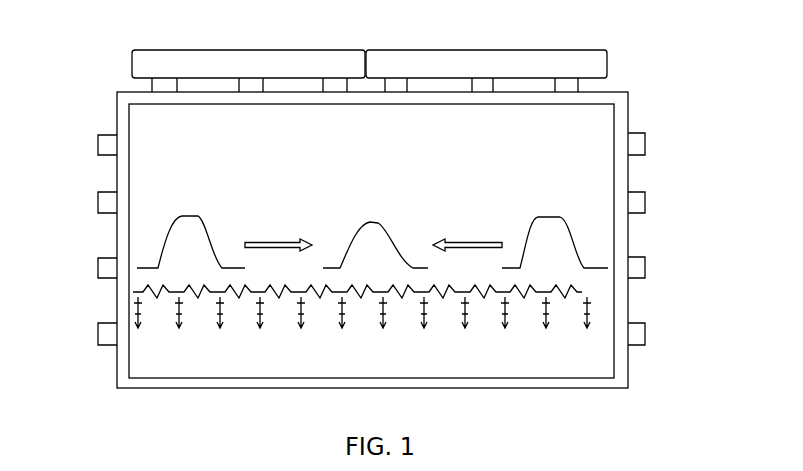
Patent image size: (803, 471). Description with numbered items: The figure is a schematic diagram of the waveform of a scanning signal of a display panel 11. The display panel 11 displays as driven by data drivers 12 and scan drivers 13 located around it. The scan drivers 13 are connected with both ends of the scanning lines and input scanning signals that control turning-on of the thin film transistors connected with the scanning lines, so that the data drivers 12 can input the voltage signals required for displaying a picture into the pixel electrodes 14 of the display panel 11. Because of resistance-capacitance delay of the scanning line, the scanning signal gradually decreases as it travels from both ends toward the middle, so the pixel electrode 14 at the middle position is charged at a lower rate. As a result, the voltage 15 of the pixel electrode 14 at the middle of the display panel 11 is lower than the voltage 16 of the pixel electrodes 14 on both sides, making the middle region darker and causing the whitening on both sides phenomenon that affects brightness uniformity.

The display panel 11 is at (596, 128).
The data drivers 12 is at (258, 63).
The scan drivers 13 is at (98, 138).
The pixel electrodes 14 is at (588, 299).
The voltage of the pixel electrode at the middle position 15 is at (377, 222).
The voltage of the pixel electrodes on both sides 16 is at (197, 216).